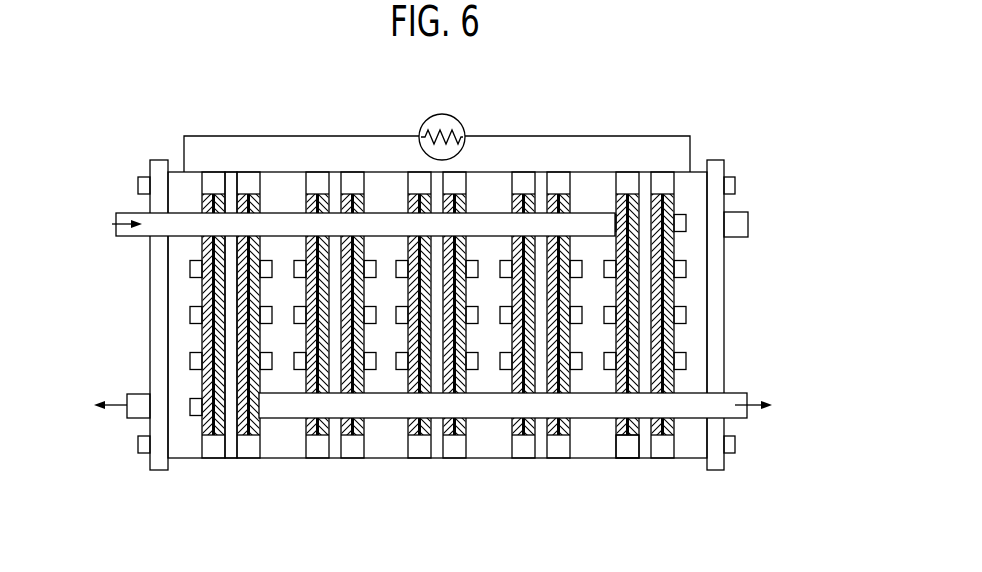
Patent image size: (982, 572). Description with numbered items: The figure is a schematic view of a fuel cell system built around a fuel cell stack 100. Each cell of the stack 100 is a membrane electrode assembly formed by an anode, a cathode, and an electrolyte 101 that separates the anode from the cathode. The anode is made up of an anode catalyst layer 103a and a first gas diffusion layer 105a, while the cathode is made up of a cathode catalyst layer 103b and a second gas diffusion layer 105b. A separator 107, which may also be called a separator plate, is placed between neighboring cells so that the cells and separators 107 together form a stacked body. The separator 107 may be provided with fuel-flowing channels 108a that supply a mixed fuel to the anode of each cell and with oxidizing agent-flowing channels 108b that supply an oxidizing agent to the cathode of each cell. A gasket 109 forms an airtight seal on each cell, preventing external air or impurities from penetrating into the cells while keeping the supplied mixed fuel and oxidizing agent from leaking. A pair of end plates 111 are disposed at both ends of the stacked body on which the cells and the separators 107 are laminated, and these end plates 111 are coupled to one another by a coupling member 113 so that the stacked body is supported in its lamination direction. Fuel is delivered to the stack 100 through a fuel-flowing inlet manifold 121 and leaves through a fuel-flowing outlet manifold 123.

The fuel cell stack 100 is at (429, 303).
The electrolyte 101 is at (231, 453).
The anode catalyst layer 103a is at (216, 437).
The cathode catalyst layer 103b is at (247, 437).
The first gas diffusion layer 105a is at (205, 437).
The second gas diffusion layer 105b is at (255, 427).
The separator 107 is at (597, 448).
The fuel-flowing channels 108a is at (195, 312).
The oxidizing agent-flowing channels 108b is at (677, 313).
The gasket 109 is at (628, 455).
The end plates 111 is at (720, 460).
The coupling member 113 is at (735, 445).
The fuel-flowing inlet manifold 121 is at (188, 228).
The fuel-flowing outlet manifold 123 is at (688, 400).